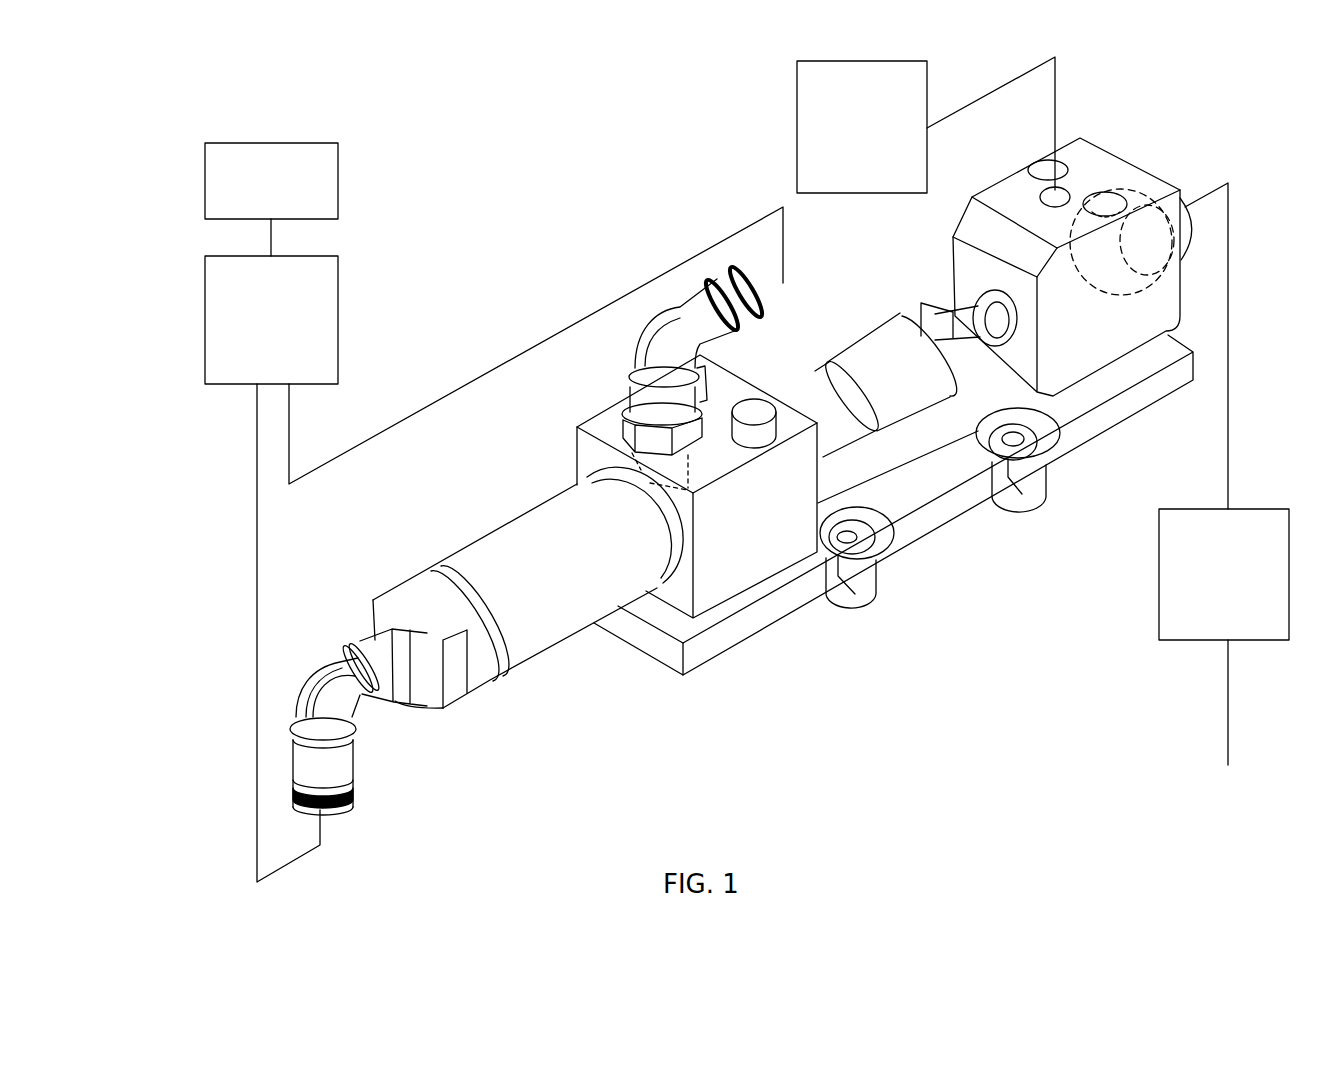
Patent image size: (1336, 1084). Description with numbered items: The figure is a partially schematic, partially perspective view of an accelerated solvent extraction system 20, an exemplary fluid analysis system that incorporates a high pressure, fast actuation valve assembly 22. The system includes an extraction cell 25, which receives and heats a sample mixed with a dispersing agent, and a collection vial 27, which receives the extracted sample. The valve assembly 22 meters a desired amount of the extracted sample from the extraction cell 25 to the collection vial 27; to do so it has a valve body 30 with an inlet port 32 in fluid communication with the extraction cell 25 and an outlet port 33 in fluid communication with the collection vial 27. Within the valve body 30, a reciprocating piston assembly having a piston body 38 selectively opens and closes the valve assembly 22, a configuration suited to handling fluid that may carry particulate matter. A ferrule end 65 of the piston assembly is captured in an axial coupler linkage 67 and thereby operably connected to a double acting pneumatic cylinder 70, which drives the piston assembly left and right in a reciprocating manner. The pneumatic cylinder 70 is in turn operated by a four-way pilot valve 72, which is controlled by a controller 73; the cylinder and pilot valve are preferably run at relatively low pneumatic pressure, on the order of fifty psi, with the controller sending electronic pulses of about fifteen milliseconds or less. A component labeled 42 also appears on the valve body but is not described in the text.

The accelerated solvent extraction system 20 is at (481, 178).
The valve assembly 22 is at (815, 644).
The extraction cell 25 is at (1224, 574).
The collection vial 27 is at (862, 127).
The valve body 30 is at (1090, 220).
The inlet port 32 is at (1113, 213).
The outlet port 33 is at (1062, 192).
The piston body 38 is at (1007, 308).
The electrical connector 42 is at (1194, 252).
The ferrule end 65 is at (930, 318).
The axial coupler linkage 67 is at (868, 298).
The double acting pneumatic cylinder 70 is at (477, 555).
The 4-way pilot valve 72 is at (271, 320).
The controller 73 is at (271, 181).